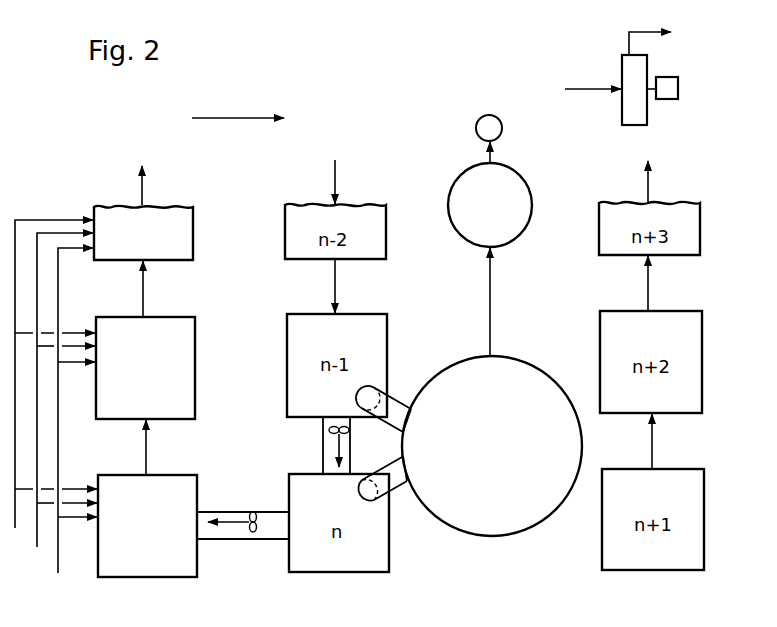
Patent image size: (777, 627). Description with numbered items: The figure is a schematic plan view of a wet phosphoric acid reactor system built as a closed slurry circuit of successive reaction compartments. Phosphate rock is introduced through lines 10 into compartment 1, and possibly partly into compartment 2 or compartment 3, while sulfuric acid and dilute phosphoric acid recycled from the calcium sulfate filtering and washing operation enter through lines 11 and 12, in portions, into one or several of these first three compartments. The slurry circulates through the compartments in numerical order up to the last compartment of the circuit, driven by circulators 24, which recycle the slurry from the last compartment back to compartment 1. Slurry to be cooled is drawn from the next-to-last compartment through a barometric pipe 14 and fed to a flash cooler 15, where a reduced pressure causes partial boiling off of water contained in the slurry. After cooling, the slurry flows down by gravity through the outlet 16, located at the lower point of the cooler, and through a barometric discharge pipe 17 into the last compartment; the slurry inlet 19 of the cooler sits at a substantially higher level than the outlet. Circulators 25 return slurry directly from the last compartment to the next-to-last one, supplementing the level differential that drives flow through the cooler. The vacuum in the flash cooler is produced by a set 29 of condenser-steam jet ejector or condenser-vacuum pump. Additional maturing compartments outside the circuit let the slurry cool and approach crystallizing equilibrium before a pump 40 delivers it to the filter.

The compartment 1 is at (154, 546).
The compartment 2 is at (154, 384).
The compartment 3 is at (150, 255).
The lines 10 is at (77, 425).
The lines 11 is at (66, 403).
The lines 12 is at (56, 387).
The barometric pipe 14 is at (404, 392).
The flash cooler 15 is at (514, 471).
The outlet 16 is at (409, 466).
The barometric discharge pipe 17 is at (404, 495).
The slurry inlet 19 is at (413, 422).
The circulators 24 is at (243, 539).
The circulators 25 is at (318, 445).
The set of condenser-steam jet ejector 29 is at (504, 140).
The pump 40 is at (630, 81).